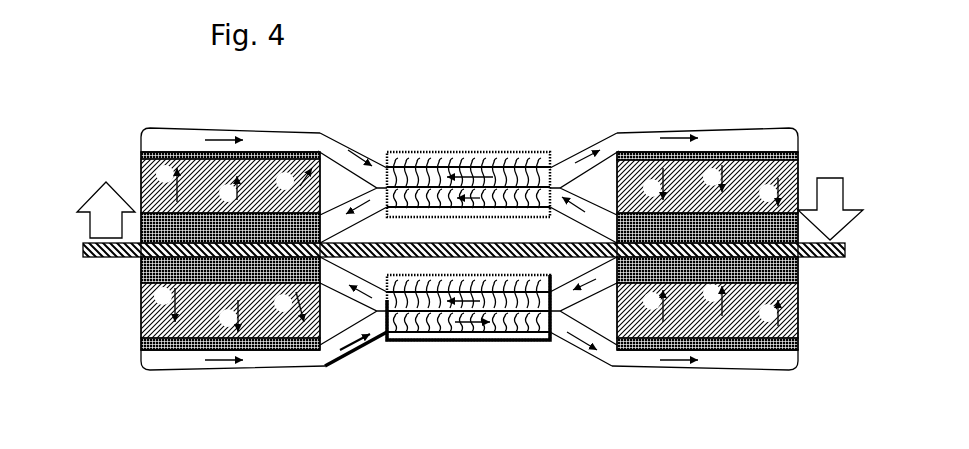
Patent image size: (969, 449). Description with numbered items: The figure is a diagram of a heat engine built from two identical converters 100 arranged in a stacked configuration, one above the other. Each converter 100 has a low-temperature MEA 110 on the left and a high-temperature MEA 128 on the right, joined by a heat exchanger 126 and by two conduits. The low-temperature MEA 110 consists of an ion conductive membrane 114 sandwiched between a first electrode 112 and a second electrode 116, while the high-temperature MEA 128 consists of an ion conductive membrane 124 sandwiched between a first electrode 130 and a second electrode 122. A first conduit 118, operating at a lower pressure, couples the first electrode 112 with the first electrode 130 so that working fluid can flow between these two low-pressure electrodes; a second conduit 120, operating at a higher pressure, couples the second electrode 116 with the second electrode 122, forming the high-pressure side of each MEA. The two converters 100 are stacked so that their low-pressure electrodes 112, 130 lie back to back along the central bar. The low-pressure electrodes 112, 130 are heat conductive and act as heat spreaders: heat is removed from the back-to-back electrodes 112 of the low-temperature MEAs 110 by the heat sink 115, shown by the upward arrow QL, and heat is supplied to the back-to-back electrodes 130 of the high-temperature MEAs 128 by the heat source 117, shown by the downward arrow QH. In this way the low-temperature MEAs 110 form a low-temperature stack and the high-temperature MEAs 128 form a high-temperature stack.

The converter 100 is at (112, 125).
The low-temperature MEA 110 is at (172, 126).
The first electrode of the low-temperature MEA 112 is at (152, 227).
The ion conductive membrane 114 is at (258, 165).
The heat sink 115 is at (85, 185).
The second electrode of the low-temperature MEA 116 is at (195, 157).
The heat source 117 is at (846, 192).
The first conduit 118 is at (349, 208).
The second conduit 120 is at (363, 152).
The second electrode of the high-temperature MEA 122 is at (792, 153).
The ion conductive membrane 124 is at (720, 193).
The heat exchanger 126 is at (556, 132).
The high-temperature MEA 128 is at (762, 120).
The first electrode of the high-temperature MEA 130 is at (775, 235).